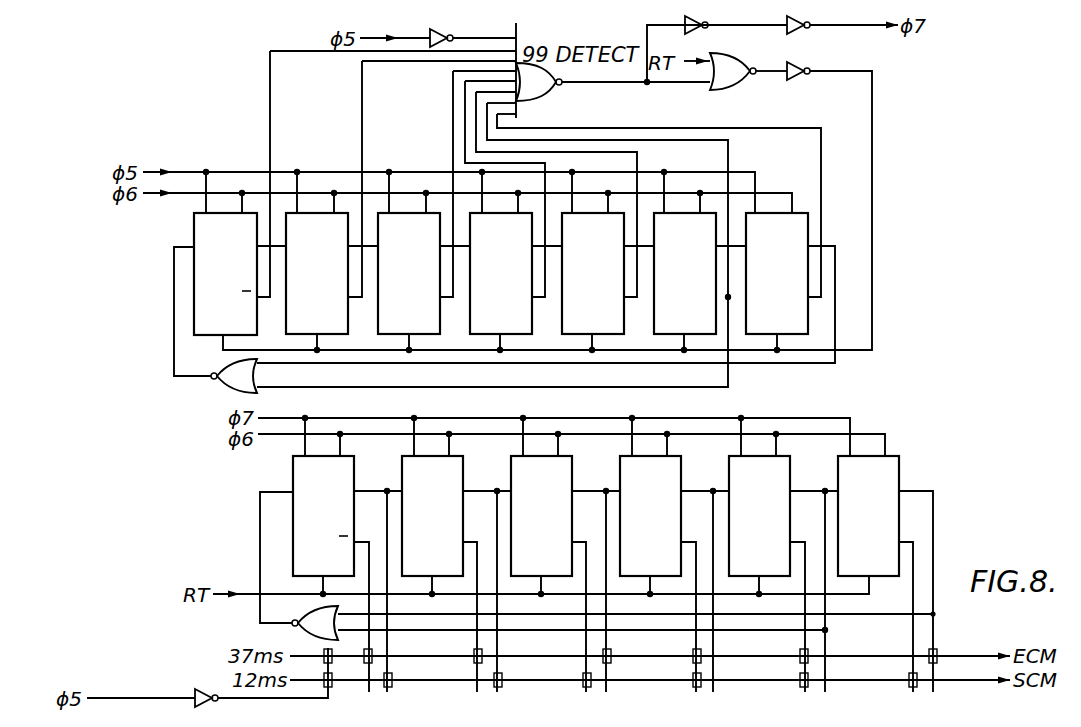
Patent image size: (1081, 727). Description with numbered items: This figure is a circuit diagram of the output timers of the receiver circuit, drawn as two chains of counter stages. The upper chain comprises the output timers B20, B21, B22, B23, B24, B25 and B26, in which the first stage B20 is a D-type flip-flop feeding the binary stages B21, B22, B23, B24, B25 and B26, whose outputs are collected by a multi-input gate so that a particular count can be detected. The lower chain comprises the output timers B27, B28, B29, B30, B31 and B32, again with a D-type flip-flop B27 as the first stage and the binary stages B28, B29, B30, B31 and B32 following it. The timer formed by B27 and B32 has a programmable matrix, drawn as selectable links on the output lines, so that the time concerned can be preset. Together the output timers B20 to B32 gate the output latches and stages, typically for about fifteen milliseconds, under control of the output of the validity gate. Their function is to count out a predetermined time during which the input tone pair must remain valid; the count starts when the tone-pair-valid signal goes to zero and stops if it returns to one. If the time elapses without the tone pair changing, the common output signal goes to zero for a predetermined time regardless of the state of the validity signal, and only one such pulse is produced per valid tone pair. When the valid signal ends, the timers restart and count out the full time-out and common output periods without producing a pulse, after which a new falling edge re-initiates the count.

The output timer B20 is at (194, 293).
The output timer B21 is at (340, 288).
The output timer B22 is at (432, 288).
The output timer B23 is at (524, 288).
The output timer B24 is at (616, 288).
The output timer B25 is at (708, 288).
The output timer B26 is at (800, 288).
The timer B27 is at (293, 527).
The output timer B28 is at (455, 522).
The output timer B29 is at (564, 522).
The output timer B30 is at (673, 522).
The output timer B31 is at (782, 522).
The timer B32 is at (891, 522).